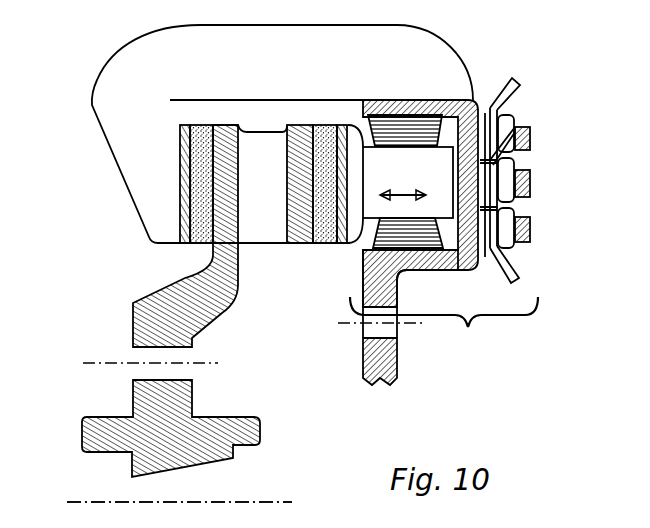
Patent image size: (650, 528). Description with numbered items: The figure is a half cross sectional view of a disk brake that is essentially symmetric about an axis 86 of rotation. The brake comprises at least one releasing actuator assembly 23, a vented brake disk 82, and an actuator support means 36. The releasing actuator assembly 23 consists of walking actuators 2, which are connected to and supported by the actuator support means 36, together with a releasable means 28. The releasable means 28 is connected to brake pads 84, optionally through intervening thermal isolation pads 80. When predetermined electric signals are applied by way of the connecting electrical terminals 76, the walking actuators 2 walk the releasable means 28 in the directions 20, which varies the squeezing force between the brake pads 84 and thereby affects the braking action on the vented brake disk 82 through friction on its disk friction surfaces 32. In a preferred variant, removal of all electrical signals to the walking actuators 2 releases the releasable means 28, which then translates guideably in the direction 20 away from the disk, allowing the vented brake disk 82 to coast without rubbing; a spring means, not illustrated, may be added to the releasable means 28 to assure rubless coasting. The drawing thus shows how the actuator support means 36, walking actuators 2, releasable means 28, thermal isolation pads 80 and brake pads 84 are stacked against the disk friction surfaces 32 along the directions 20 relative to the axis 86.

The walking actuators 2 is at (372, 133).
The directions 20 is at (404, 193).
The releasing actuator assembly 23 is at (444, 328).
The releasable means 28 is at (458, 262).
The disk friction surfaces 32 is at (218, 135).
The actuator support means 36 is at (474, 112).
The electrical terminals 76 is at (530, 146).
The thermal isolation pads 80 is at (183, 124).
The vented brake disk 82 is at (268, 245).
The brake pads 84 is at (197, 125).
The axis of rotation 86 is at (274, 500).